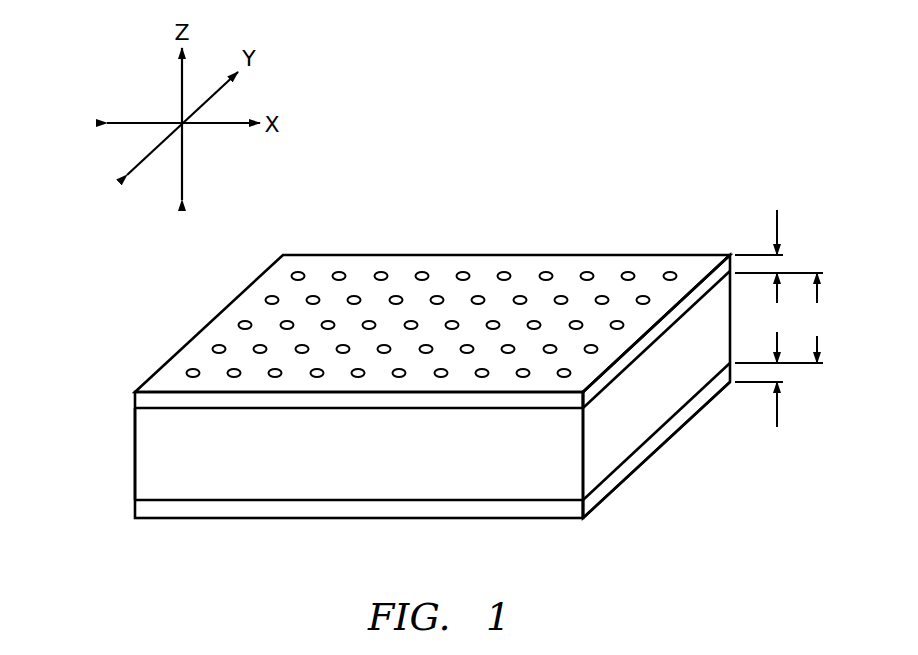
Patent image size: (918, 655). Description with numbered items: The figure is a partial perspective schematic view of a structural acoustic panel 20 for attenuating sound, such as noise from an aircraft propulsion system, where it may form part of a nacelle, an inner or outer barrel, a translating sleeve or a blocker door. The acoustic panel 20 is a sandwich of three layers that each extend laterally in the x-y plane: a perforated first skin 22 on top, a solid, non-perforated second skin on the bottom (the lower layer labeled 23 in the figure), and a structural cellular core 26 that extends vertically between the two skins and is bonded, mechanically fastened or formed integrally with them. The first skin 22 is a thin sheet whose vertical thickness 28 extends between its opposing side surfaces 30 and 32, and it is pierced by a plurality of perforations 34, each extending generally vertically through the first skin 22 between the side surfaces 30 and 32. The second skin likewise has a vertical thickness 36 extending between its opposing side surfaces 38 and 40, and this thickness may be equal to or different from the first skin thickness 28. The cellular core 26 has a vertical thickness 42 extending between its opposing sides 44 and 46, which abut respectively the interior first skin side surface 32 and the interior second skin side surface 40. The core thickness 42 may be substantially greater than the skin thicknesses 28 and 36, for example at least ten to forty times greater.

The acoustic panel 20 is at (542, 206).
The first skin 22 is at (130, 398).
The second face sheet 23 is at (127, 510).
The cellular core 26 is at (125, 408).
The first skin vertical thickness 28 is at (777, 220).
The first skin side surface 30 is at (692, 288).
The interior first skin side surface 32 is at (707, 293).
The perforations 34 is at (504, 276).
The second skin vertical thickness 36 is at (777, 410).
The second skin side surface 38 is at (684, 427).
The interior second skin side surface 40 is at (697, 394).
The core vertical thickness 42 is at (784, 318).
The core side 44 is at (657, 340).
The core side 46 is at (648, 445).